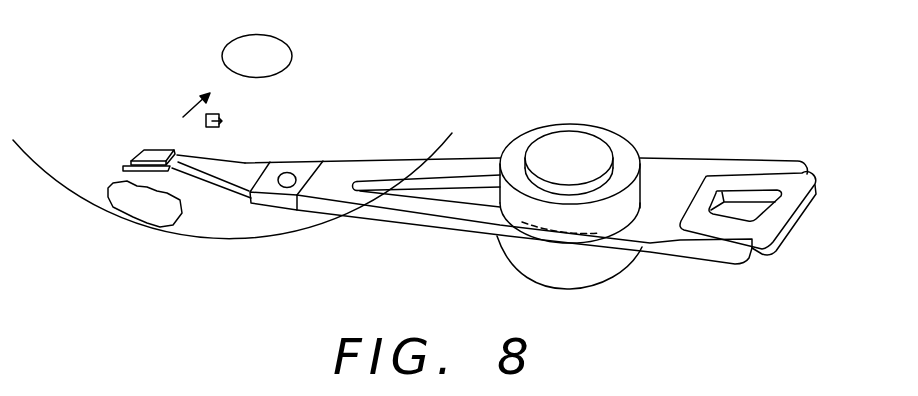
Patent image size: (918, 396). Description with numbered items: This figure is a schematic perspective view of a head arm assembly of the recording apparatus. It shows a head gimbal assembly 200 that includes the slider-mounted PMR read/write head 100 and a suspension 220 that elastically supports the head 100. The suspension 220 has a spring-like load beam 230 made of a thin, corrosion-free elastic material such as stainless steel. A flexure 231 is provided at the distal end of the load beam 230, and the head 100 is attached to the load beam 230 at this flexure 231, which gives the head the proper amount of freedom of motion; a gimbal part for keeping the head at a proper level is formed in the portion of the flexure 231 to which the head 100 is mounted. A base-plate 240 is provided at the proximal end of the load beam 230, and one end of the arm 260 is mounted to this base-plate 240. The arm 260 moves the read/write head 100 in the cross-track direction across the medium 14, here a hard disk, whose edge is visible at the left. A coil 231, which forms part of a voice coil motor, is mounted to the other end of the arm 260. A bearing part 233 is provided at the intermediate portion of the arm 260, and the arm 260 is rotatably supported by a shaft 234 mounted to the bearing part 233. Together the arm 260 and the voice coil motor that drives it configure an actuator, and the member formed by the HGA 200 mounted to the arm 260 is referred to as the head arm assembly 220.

The medium 14 is at (118, 217).
The slider-mounted PMR read/write head 100 is at (145, 151).
The head gimbal assembly 200 is at (230, 213).
The suspension 220 is at (430, 123).
The load beam 230 is at (245, 172).
The flexure 231 is at (127, 164).
The bearing part 233 is at (522, 140).
The shaft 234 is at (572, 143).
The base-plate 240 is at (318, 163).
The arm 260 is at (388, 217).